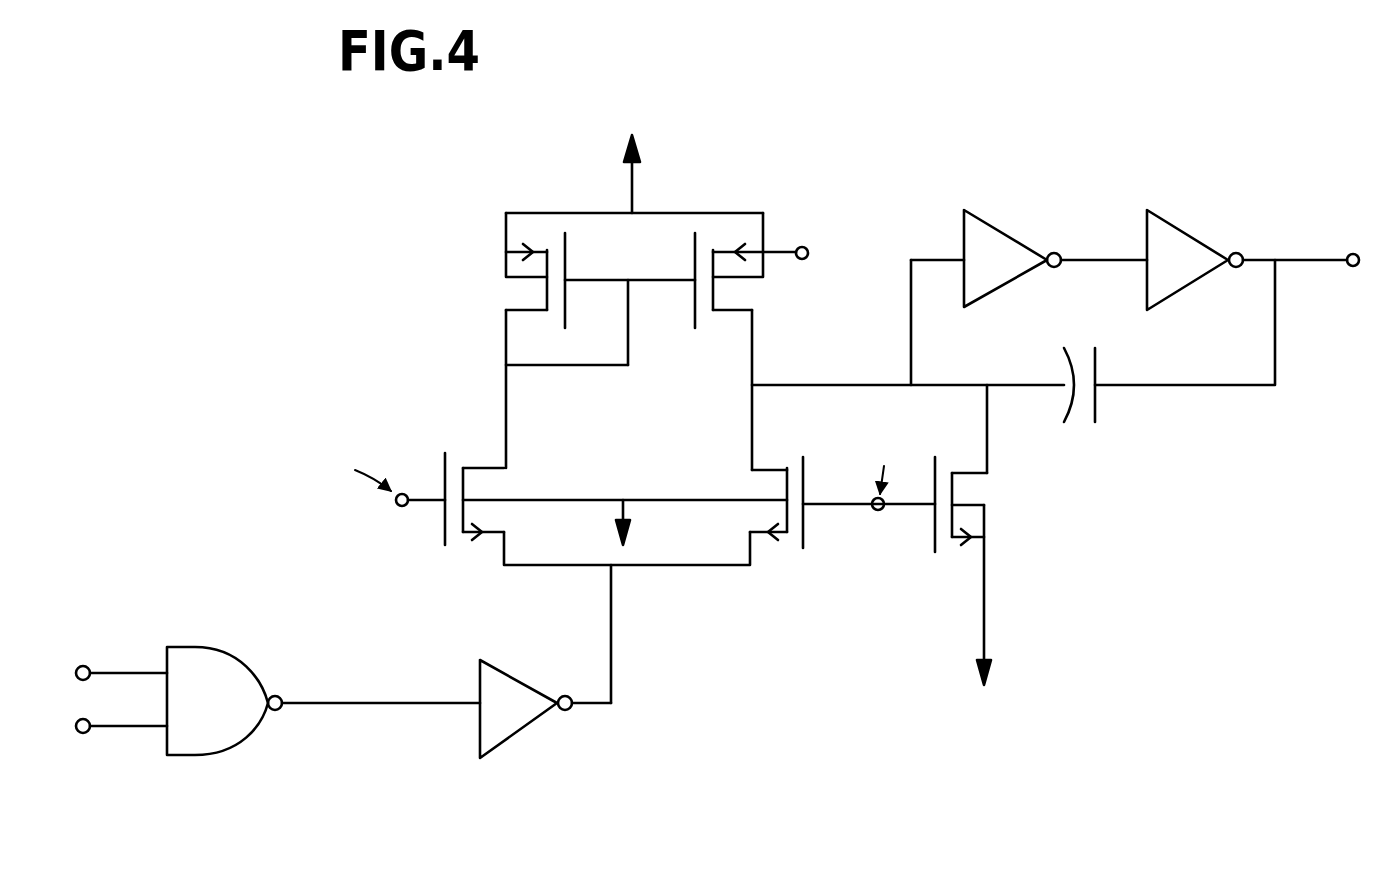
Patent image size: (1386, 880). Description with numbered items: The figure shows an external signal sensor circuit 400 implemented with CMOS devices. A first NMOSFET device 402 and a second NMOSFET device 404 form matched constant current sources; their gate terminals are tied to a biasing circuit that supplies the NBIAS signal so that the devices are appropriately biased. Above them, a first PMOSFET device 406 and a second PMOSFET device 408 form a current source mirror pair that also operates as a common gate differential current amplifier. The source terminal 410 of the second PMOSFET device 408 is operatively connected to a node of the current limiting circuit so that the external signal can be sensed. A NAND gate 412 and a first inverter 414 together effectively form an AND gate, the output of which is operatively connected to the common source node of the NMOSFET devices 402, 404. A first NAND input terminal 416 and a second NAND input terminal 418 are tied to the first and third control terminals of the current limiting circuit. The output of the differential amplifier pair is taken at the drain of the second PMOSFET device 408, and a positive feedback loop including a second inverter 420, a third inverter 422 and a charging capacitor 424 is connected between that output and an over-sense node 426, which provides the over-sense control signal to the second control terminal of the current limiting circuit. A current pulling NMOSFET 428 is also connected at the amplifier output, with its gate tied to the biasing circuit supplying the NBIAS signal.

The external signal sensor circuit 400 is at (495, 181).
The first NMOSFET device 402 is at (522, 477).
The second NMOSFET device 404 is at (738, 482).
The first PMOSFET device 406 is at (493, 274).
The second PMOSFET device 408 is at (770, 296).
The source terminal 410 is at (804, 246).
The NAND gate 412 is at (201, 645).
The first inverter 414 is at (468, 686).
The first NAND input terminal 416 is at (81, 658).
The second NAND input terminal 418 is at (79, 737).
The second inverter 420 is at (1026, 226).
The third inverter 422 is at (1198, 230).
The charging capacitor 424 is at (1080, 430).
The over-sense node 426 is at (1353, 247).
The current pulling NMOSFET 428 is at (993, 518).